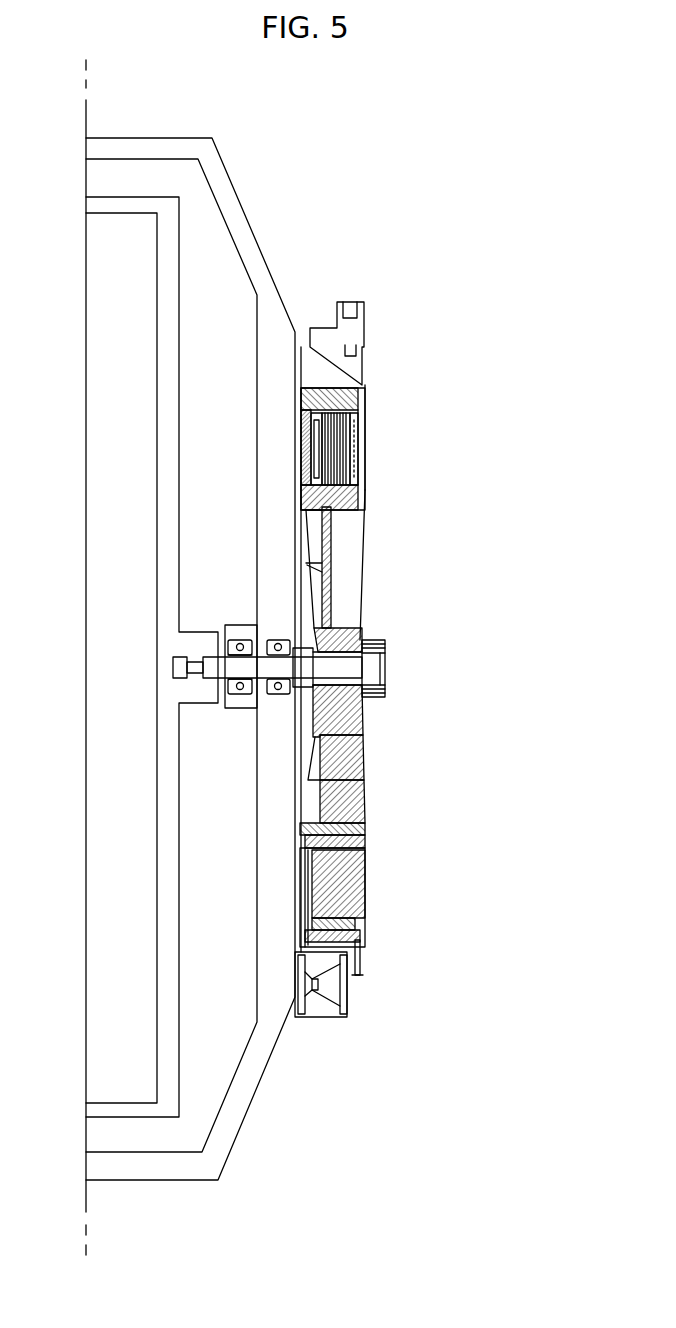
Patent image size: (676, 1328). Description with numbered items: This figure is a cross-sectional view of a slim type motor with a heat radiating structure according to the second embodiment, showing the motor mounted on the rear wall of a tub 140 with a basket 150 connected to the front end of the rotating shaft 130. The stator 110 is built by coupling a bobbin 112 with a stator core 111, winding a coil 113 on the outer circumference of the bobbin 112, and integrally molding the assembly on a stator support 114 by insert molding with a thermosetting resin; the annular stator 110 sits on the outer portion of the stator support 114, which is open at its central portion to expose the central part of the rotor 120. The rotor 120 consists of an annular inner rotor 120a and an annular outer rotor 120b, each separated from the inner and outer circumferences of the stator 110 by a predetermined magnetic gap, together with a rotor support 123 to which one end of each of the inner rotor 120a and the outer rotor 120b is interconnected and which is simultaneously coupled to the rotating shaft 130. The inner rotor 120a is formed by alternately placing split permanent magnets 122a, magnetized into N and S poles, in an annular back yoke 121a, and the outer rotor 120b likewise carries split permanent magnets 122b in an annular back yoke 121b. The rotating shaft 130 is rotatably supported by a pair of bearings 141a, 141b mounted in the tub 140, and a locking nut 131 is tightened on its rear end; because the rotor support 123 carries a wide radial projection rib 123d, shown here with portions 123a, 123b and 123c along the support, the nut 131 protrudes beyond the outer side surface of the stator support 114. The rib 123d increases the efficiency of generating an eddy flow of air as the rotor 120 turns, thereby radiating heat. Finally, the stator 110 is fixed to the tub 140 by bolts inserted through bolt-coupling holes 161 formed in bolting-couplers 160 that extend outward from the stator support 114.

The stator 110 is at (383, 449).
The stator core 111 is at (338, 428).
The bobbin 112 is at (360, 481).
The coil 113 is at (352, 456).
The stator support 114 is at (365, 413).
The rotor 120 is at (429, 887).
The inner rotor 120a is at (402, 841).
The outer rotor 120b is at (405, 933).
The back yoke 121a is at (340, 832).
The back yoke 121b is at (350, 940).
The permanent magnet 122a is at (345, 848).
The permanent magnet 122b is at (350, 922).
The rotor support 123 is at (372, 656).
The hub flange 123a is at (312, 558).
The hub first portion 123b is at (320, 733).
The hub second portion 123c is at (322, 782).
The radial projection rib 123d is at (365, 805).
The rotating shaft 130 is at (340, 672).
The nut 131 is at (387, 668).
The tub 140 is at (267, 298).
The bearing 141a is at (278, 640).
The bearing 141b is at (240, 640).
The basket 150 is at (175, 1092).
The bolting-coupler 160 is at (330, 1013).
The bolt-coupling hole 161 is at (335, 982).